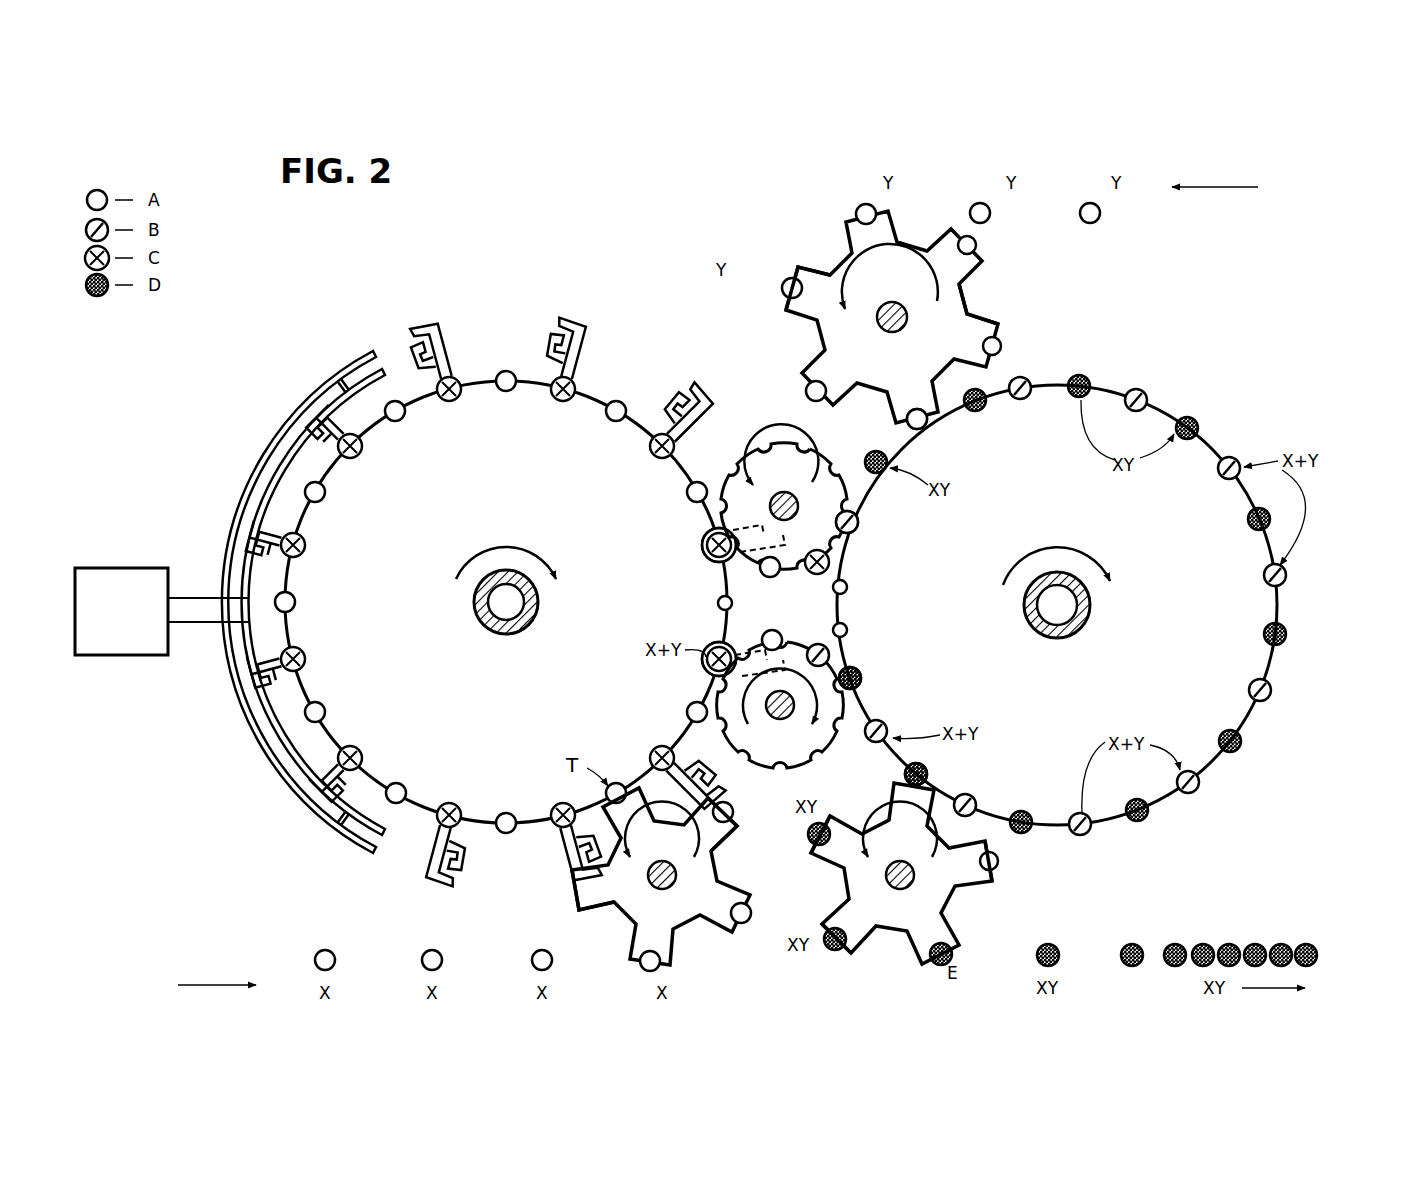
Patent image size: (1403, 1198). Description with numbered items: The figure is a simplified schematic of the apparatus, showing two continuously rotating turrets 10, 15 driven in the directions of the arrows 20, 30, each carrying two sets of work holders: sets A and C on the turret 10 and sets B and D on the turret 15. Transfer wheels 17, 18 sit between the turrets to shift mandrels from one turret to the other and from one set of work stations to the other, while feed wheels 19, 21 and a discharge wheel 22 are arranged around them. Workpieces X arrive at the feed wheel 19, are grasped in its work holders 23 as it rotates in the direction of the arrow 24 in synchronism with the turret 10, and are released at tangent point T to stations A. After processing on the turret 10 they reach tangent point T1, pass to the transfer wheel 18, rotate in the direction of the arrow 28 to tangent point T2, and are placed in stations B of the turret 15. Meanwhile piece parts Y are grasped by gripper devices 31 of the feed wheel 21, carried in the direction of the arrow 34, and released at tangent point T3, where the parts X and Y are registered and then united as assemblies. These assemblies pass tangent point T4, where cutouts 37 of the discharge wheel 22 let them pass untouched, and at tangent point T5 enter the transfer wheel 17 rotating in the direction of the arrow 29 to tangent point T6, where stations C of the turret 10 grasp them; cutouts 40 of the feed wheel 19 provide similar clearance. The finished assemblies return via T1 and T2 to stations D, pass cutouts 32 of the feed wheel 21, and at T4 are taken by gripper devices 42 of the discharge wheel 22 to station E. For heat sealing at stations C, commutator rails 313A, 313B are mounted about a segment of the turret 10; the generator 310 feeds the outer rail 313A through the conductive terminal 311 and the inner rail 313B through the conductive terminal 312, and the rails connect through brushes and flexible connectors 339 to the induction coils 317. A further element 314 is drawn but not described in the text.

The rotary turret 10 is at (539, 608).
The rotary turret 15 is at (1057, 605).
The transfer wheel 17 is at (795, 703).
The transfer wheel 18 is at (790, 512).
The feed wheel 19 is at (675, 885).
The arrow 20 is at (487, 545).
The feed wheel 21 is at (897, 335).
The discharge wheel 22 is at (920, 885).
The work holders 23 is at (733, 812).
The arrow 24 is at (668, 848).
The arrow 28 is at (784, 500).
The arrow 29 is at (760, 722).
The arrow 30 is at (1002, 572).
The gripper devices 31 is at (860, 214).
The cutouts 32 is at (836, 267).
The arrow 34 is at (925, 285).
The cutouts 37 is at (838, 895).
The cutouts 40 is at (728, 870).
The gripper devices 42 is at (872, 955).
The generator 310 is at (128, 655).
The conductive terminal 311 is at (210, 622).
The conductive terminal 312 is at (212, 598).
The outer commutator rail 313A is at (278, 437).
The inner commutator rail 313B is at (268, 496).
The rail tie 314 is at (372, 375).
The induction coils 317 is at (657, 432).
The flexible connectors 339 is at (462, 332).
The tangent point T1 is at (713, 527).
The tangent point T2 is at (855, 538).
The tangent point T3 is at (940, 420).
The tangent point T4 is at (945, 782).
The tangent point T5 is at (854, 670).
The tangent point T6 is at (711, 684).